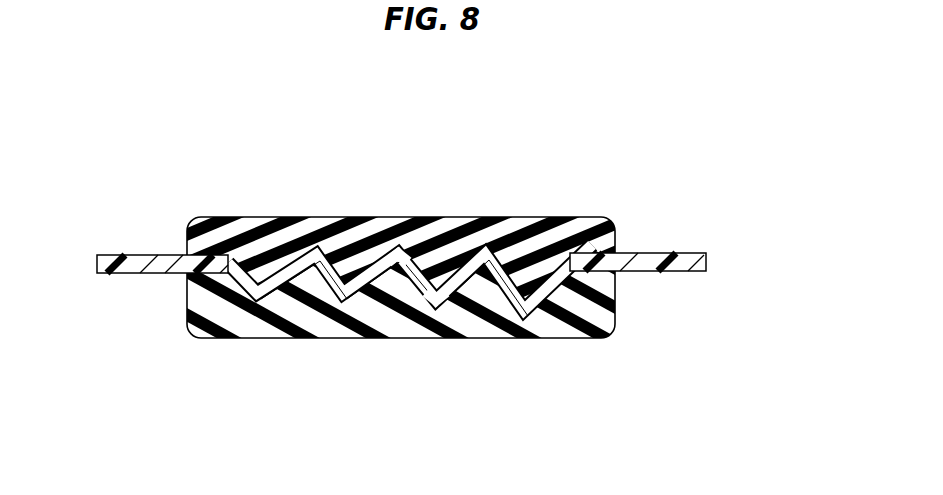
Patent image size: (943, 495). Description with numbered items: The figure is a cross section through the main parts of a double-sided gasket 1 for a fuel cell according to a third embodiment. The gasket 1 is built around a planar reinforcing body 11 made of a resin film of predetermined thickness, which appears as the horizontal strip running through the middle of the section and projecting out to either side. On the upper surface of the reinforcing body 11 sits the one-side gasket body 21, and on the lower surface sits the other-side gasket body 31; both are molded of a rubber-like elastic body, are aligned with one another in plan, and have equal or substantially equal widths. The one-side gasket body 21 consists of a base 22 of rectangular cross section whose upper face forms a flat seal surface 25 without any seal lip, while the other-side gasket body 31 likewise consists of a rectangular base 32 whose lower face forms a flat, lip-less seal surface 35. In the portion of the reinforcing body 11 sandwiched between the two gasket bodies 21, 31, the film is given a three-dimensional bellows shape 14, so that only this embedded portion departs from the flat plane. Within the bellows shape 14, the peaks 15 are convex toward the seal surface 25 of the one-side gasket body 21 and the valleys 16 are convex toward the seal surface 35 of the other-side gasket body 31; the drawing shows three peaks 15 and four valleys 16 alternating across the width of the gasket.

The double-sided gasket 1 is at (128, 203).
The reinforcing body 11 is at (703, 262).
The bellows shape 14 is at (431, 270).
The peaks 15 is at (397, 258).
The valleys 16 is at (437, 305).
The one-side gasket body 21 is at (567, 238).
The base 22 is at (262, 242).
The seal surface 25 is at (321, 218).
The other-side gasket body 31 is at (560, 330).
The base 32 is at (258, 325).
The seal surface 35 is at (337, 340).